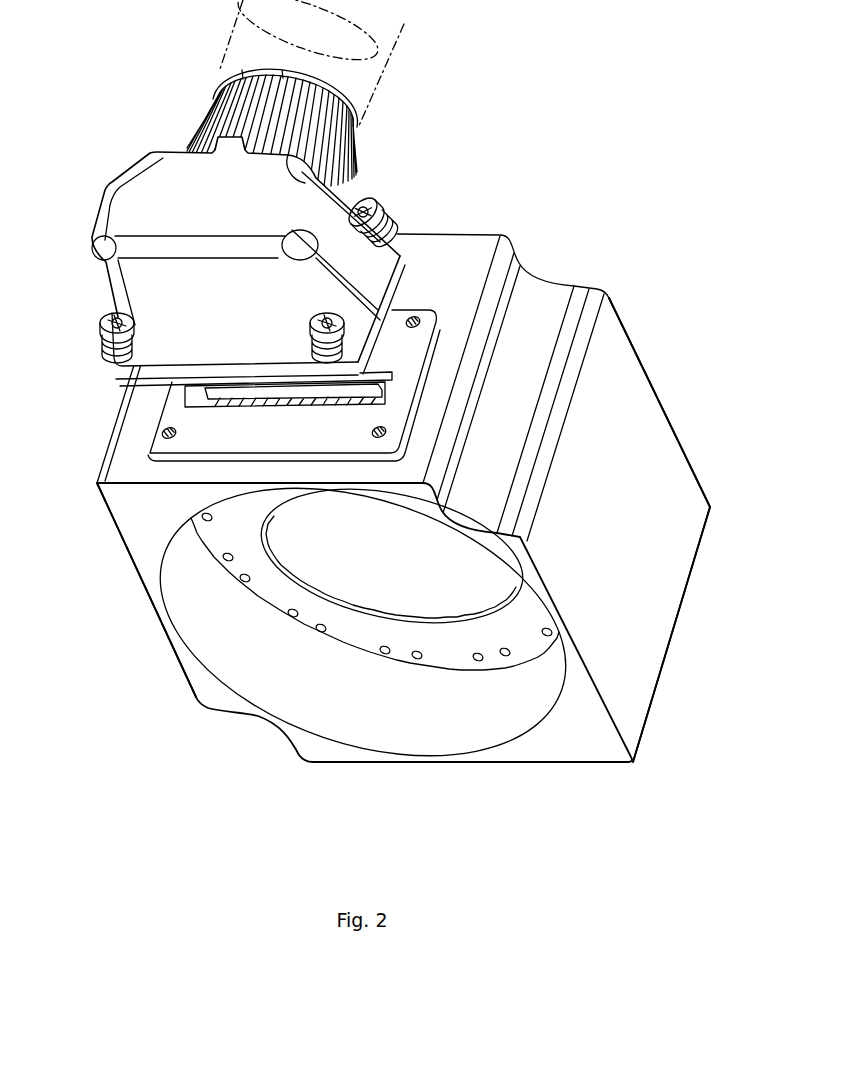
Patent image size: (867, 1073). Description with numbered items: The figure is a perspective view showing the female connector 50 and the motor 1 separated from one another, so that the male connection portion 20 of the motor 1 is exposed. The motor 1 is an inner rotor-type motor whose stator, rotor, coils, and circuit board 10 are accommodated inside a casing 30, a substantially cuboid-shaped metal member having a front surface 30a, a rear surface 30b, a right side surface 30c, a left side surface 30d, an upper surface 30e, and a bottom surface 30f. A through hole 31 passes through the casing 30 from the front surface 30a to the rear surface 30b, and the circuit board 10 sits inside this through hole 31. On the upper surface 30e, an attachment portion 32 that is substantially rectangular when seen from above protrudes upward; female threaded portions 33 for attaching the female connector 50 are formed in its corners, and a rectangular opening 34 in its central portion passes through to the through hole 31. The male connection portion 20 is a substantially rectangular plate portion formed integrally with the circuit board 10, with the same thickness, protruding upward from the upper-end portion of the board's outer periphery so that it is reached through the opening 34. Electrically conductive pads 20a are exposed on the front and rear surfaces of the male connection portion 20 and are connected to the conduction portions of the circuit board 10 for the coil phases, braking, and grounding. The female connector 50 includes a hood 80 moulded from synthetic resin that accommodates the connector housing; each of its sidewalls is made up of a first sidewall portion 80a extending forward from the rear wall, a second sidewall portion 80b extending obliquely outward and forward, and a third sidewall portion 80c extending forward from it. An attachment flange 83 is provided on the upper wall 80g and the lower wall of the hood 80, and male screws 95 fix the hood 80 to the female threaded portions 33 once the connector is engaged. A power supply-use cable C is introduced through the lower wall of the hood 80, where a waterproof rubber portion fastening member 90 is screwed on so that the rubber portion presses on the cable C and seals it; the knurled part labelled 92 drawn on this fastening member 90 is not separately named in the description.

The motor 1 is at (394, 409).
The circuit board 10 is at (343, 632).
The male connection portion 20 is at (388, 396).
The electrically conductive pads 20a is at (218, 406).
The casing 30 is at (672, 604).
The front surface 30a is at (325, 762).
The rear surface 30b is at (660, 400).
The right side surface 30c is at (683, 478).
The left side surface 30d is at (133, 562).
The upper surface 30e is at (433, 243).
The bottom surface 30f is at (602, 764).
The through hole 31 is at (567, 658).
The attachment portion 32 is at (174, 457).
The female threaded portions 33 is at (161, 432).
The opening 34 is at (392, 372).
The female connector 50 is at (327, 198).
The hood 80 is at (98, 202).
The first sidewall portion 80a is at (340, 222).
The second sidewall portion 80b is at (380, 233).
The third sidewall portion 80c is at (400, 278).
The upper wall 80g is at (172, 287).
The attachment flange 83 is at (396, 265).
The waterproof rubber portion fastening member 90 is at (221, 77).
The gland nut 92 is at (190, 127).
The male screws 95 is at (374, 205).
The power supply-use cable C is at (398, 36).